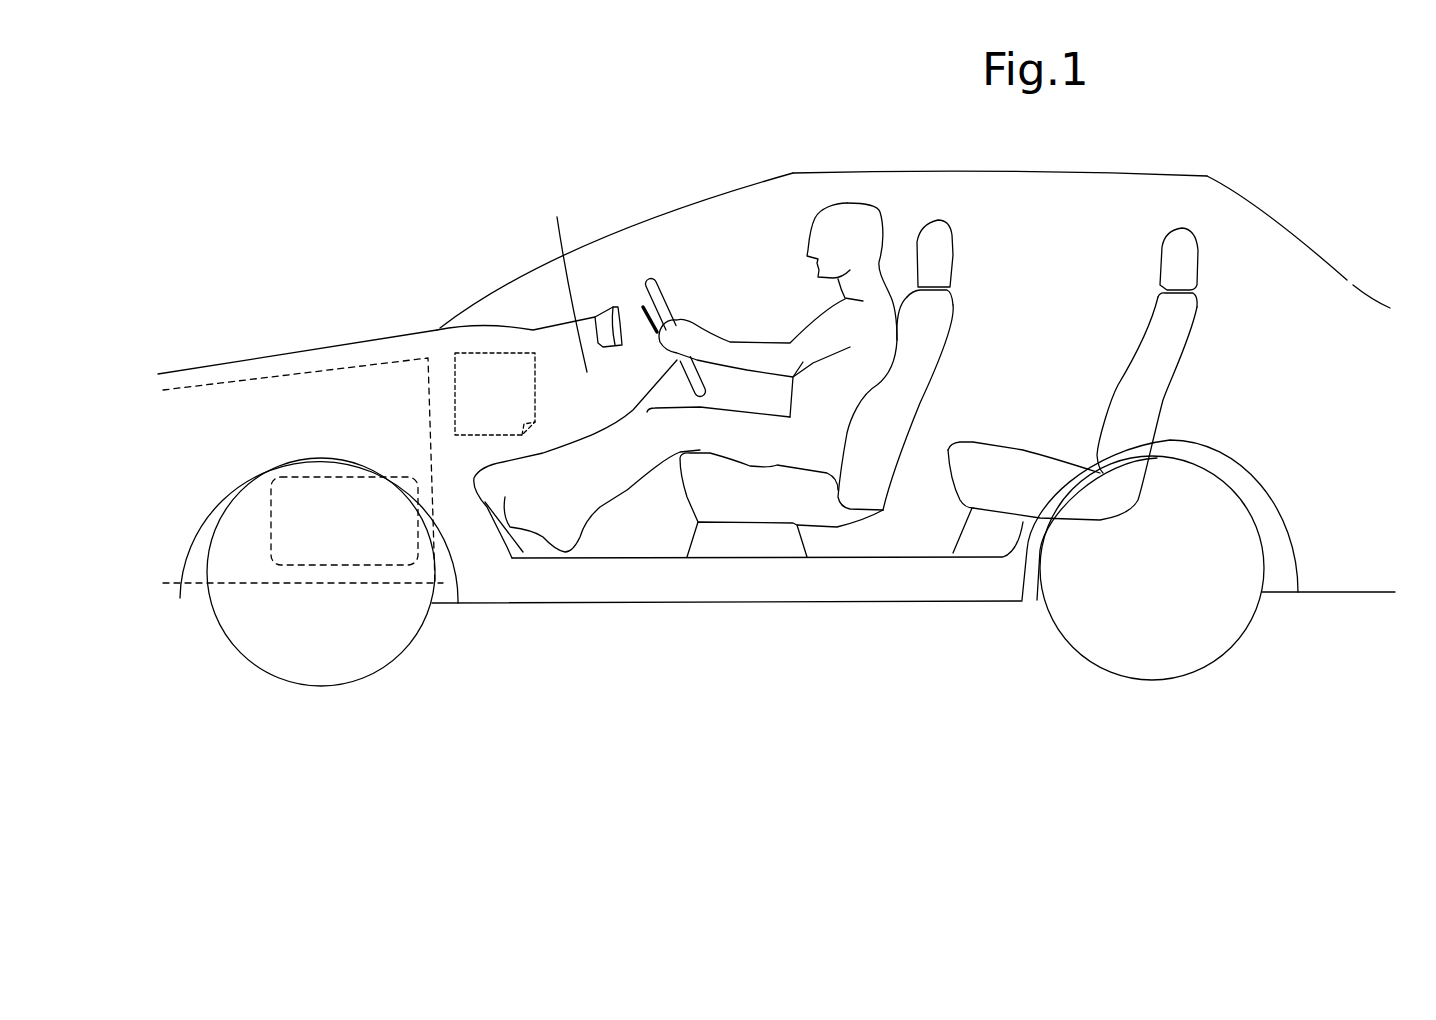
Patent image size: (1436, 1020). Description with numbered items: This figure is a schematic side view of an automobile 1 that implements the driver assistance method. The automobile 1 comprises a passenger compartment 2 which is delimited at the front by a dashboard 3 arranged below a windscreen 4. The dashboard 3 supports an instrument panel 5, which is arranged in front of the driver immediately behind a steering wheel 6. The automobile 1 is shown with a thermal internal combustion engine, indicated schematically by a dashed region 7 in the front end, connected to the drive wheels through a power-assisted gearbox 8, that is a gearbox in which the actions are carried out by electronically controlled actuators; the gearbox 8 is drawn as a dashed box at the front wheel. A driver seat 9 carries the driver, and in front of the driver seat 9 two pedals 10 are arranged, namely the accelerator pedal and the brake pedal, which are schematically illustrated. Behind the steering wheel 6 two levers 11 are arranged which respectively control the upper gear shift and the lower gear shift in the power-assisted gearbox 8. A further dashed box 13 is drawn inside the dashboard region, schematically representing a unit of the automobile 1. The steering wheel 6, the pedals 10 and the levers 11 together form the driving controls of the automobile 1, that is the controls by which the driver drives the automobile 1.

The automobile 1 is at (352, 110).
The passenger compartment 2 is at (822, 125).
The dashboard 3 is at (568, 284).
The windscreen 4 is at (527, 272).
The instrument panel 5 is at (603, 323).
The steering wheel 6 is at (663, 300).
The front end region 7 is at (302, 408).
The power-assisted gearbox 8 is at (368, 533).
The driver seat 9 is at (753, 498).
The pedals 10 is at (505, 520).
The levers 11 is at (650, 323).
The control unit 13 is at (495, 394).